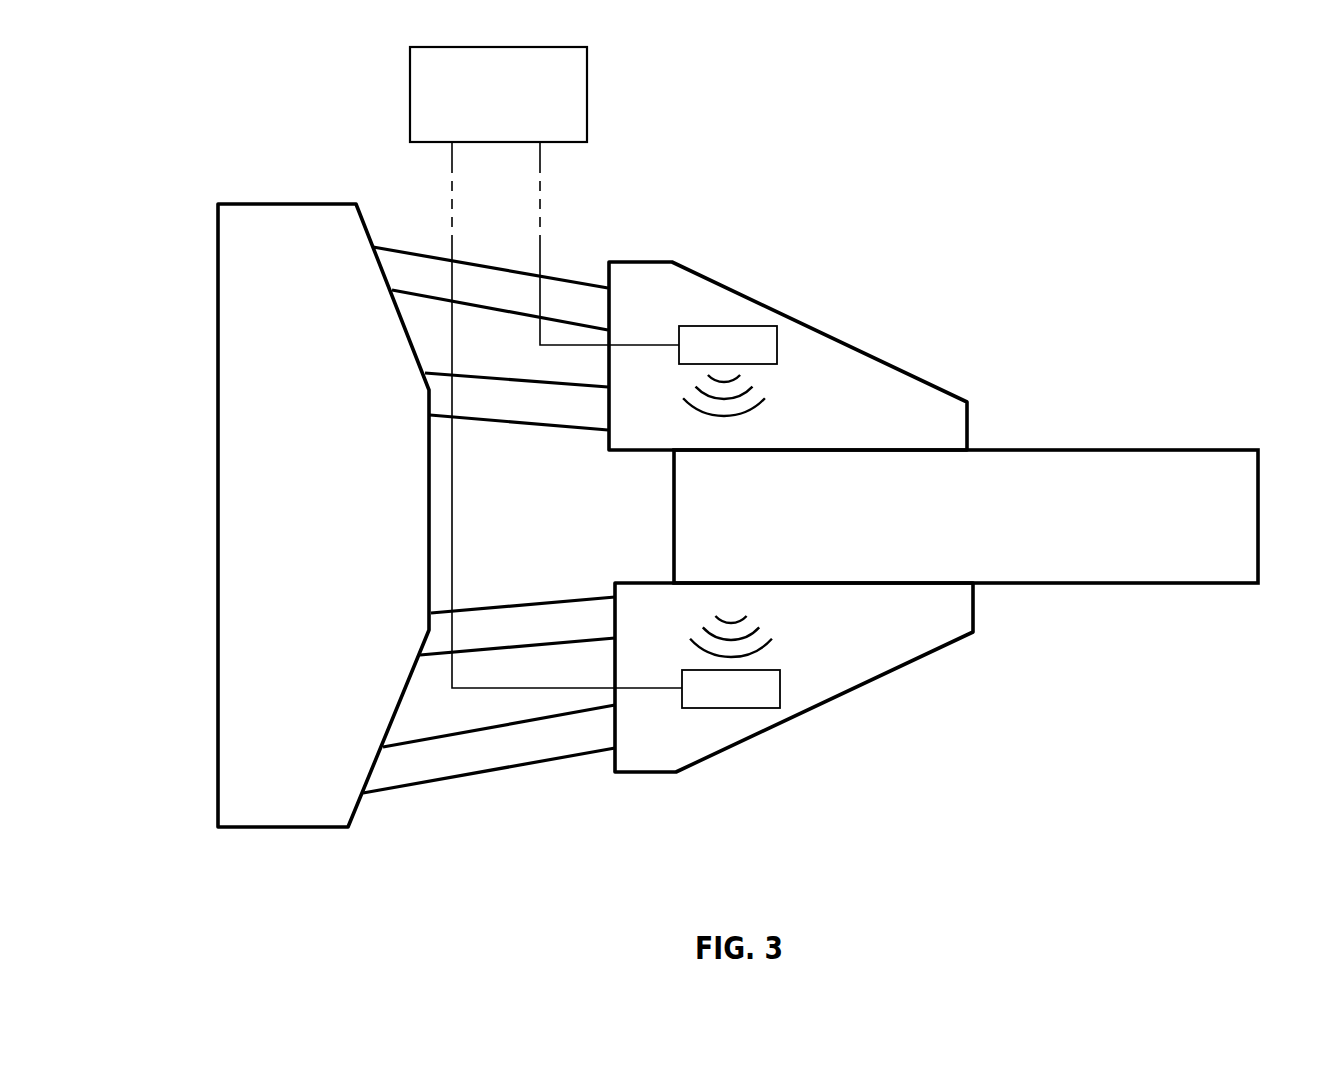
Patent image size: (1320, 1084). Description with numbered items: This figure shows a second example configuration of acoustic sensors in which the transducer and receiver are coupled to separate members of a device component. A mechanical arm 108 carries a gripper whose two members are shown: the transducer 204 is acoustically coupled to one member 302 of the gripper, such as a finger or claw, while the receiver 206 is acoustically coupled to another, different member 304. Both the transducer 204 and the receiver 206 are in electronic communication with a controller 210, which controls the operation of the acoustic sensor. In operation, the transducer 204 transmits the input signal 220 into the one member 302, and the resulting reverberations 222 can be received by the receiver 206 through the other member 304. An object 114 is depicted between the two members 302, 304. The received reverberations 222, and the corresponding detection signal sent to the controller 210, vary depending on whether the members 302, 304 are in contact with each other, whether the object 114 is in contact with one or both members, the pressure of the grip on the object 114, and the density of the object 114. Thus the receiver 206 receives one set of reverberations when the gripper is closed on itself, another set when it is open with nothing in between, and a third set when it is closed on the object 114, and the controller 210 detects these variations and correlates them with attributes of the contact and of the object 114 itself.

The arm 108 is at (226, 93).
The controller 210 is at (512, 106).
The member 302 is at (890, 417).
The transducer 204 is at (742, 326).
The input signal 220 is at (796, 387).
The object 114 is at (1003, 525).
The member 304 is at (898, 632).
The receiver 206 is at (763, 708).
The reverberations 222 is at (802, 660).